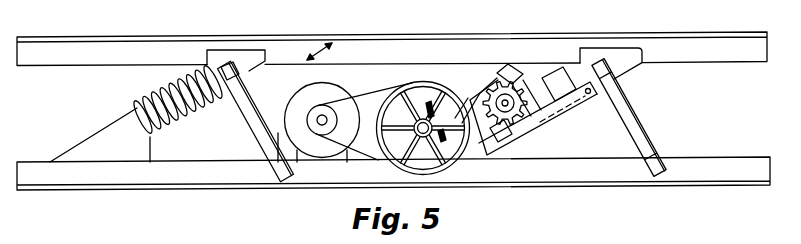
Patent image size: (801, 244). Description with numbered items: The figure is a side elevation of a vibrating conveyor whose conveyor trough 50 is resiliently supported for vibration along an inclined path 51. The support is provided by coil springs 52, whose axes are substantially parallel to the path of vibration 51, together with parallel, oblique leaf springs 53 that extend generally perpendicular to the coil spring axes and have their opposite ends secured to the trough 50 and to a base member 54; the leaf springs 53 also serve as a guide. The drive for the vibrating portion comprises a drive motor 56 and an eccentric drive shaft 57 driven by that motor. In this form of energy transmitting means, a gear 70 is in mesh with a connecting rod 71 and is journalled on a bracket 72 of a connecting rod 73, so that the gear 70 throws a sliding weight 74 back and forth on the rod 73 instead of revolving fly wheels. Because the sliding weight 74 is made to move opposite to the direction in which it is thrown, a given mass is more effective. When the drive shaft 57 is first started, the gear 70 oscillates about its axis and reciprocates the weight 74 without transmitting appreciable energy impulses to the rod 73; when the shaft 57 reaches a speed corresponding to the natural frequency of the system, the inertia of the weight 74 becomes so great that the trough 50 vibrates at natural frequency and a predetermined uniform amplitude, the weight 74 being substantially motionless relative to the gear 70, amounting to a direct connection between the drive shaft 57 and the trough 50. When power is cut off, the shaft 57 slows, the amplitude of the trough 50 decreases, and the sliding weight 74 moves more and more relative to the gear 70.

The conveyor trough 50 is at (392, 55).
The inclined path 51 is at (318, 52).
The coil springs 52 is at (166, 91).
The leaf springs 53 is at (243, 117).
The base member 54 is at (581, 182).
The drive motor 56 is at (295, 100).
The eccentric drive shaft 57 is at (374, 98).
The gear 70 is at (473, 97).
The connecting rod 71 is at (467, 103).
The bracket 72 is at (510, 99).
The connecting rod 73 is at (583, 100).
The sliding weight 74 is at (562, 87).